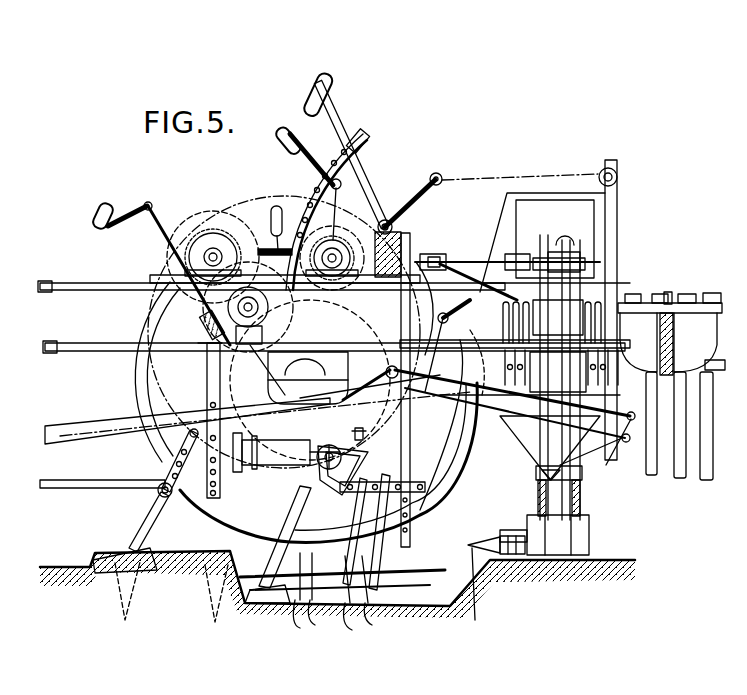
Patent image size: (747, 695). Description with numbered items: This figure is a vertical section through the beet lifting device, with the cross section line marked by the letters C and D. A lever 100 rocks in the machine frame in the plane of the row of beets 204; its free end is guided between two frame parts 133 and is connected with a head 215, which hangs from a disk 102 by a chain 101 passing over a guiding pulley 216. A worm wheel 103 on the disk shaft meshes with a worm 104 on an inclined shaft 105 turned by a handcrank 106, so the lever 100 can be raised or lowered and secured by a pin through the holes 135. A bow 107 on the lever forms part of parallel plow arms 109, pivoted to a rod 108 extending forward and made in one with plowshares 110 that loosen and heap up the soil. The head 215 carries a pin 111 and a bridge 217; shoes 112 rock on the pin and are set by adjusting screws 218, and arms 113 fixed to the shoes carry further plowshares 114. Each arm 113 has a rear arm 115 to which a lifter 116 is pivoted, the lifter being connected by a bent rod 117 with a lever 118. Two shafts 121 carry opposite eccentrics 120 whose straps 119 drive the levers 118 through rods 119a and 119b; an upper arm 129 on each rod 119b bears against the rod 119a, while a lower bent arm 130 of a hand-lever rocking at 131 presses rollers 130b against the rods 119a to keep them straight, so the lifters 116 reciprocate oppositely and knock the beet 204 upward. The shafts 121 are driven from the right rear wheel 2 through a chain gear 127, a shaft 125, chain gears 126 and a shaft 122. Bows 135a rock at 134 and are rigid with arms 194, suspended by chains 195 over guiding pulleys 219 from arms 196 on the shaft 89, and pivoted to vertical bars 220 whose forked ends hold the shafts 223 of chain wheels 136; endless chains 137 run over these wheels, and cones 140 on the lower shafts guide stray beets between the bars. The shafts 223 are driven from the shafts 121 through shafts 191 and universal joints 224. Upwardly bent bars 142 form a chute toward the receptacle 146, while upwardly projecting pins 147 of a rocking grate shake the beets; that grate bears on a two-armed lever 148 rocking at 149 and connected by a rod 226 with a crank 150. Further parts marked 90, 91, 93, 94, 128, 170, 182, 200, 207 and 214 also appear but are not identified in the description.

The right rear wheel 2 is at (160, 318).
The shaft 89 is at (386, 218).
The hand lever 90 is at (362, 172).
The hopper 91 is at (712, 330).
The hopper fastening 93 is at (682, 302).
The hopper tines 94 is at (660, 476).
The lever 100 is at (95, 428).
The chain 101 is at (300, 440).
The disk 102 is at (268, 307).
The worm wheel 103 is at (270, 316).
The worm 104 is at (206, 320).
The inclined shaft 105 is at (152, 208).
The handcrank 106 is at (112, 226).
The bow 107 is at (172, 460).
The rod 108 is at (88, 482).
The plow arms 109 is at (147, 522).
The plowshares 110 is at (125, 556).
The pin 111 is at (331, 447).
The shoes 112 is at (370, 463).
The arms 113 is at (308, 520).
The plowshares 114 is at (258, 606).
The rear arm 115 is at (297, 616).
The lifter 116 is at (353, 618).
The bent rod 117 is at (370, 522).
The lever 118 is at (370, 479).
The eccentric straps 119 is at (402, 312).
The rod 119a is at (385, 372).
The rod 119b is at (411, 440).
The eccentrics 120 is at (422, 250).
The parallel shafts 121 is at (428, 256).
The shaft 122 is at (305, 240).
The shaft 125 is at (214, 249).
The chain gears 126 is at (276, 213).
The chain gear 127 is at (320, 326).
The rod 128 is at (412, 412).
The upper arm 129 is at (412, 397).
The lower bent arm 130 is at (390, 339).
The rollers 130b is at (400, 340).
The pivot 131 is at (376, 333).
The frame parts 133 is at (207, 378).
The pivot 134 is at (390, 379).
The holes 135 is at (222, 485).
The bows 135a is at (470, 425).
The chain wheels 136 is at (553, 240).
The endless chains 137 is at (540, 246).
The cones 140 is at (485, 560).
The upwardly bent bars 142 is at (602, 308).
The receptacle 146 is at (530, 450).
The upwardly projecting pins 147 is at (616, 221).
The two-armed lever 148 is at (379, 380).
The pivot 149 is at (470, 345).
The crank 150 is at (468, 312).
The nut 170 is at (700, 294).
The quadrant 182 is at (354, 220).
The shafts 191 is at (468, 270).
The arms 194 is at (572, 485).
The chains 195 is at (495, 178).
The arms 196 is at (431, 180).
The housing 200 is at (308, 378).
The beet 204 is at (165, 552).
The marker 207 is at (493, 535).
The bolt 214 is at (669, 298).
The head 215 is at (292, 470).
The guiding pulley 216 is at (282, 364).
The bridge 217 is at (370, 450).
The adjusting screws 218 is at (361, 432).
The guiding pulleys 219 is at (619, 177).
The vertical bars 220 is at (548, 479).
The shafts 223 is at (589, 538).
The universal joints 224 is at (462, 262).
The rod 226 is at (462, 322).
The section line C—D C is at (423, 218).
The section line C— D is at (431, 522).